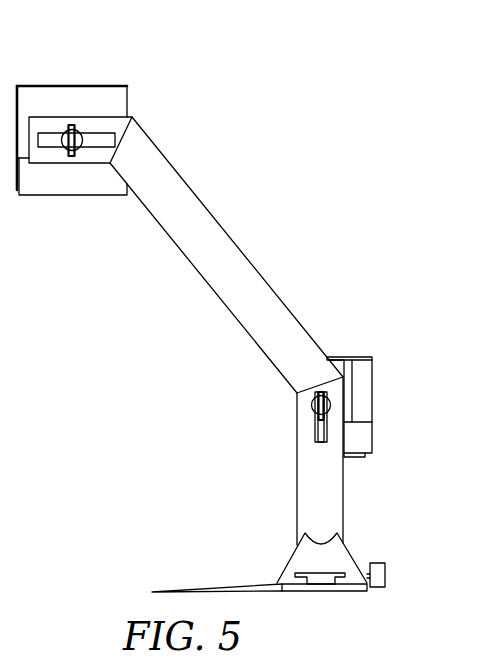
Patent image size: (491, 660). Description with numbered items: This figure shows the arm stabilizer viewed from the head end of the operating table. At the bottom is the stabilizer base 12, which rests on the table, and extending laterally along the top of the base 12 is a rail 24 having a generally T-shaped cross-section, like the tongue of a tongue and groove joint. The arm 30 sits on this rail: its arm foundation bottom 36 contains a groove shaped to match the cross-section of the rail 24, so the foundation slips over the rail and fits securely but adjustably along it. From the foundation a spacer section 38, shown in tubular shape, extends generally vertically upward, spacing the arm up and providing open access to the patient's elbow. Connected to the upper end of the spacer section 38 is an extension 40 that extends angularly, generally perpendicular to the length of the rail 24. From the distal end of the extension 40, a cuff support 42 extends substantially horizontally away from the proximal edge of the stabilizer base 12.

The stabilizer base 12 is at (249, 583).
The rail 24 is at (325, 578).
The arm 30 is at (210, 368).
The arm foundation bottom 36 is at (287, 588).
The spacer section 38 is at (335, 502).
The extension 40 is at (200, 255).
The cuff support 42 is at (98, 127).